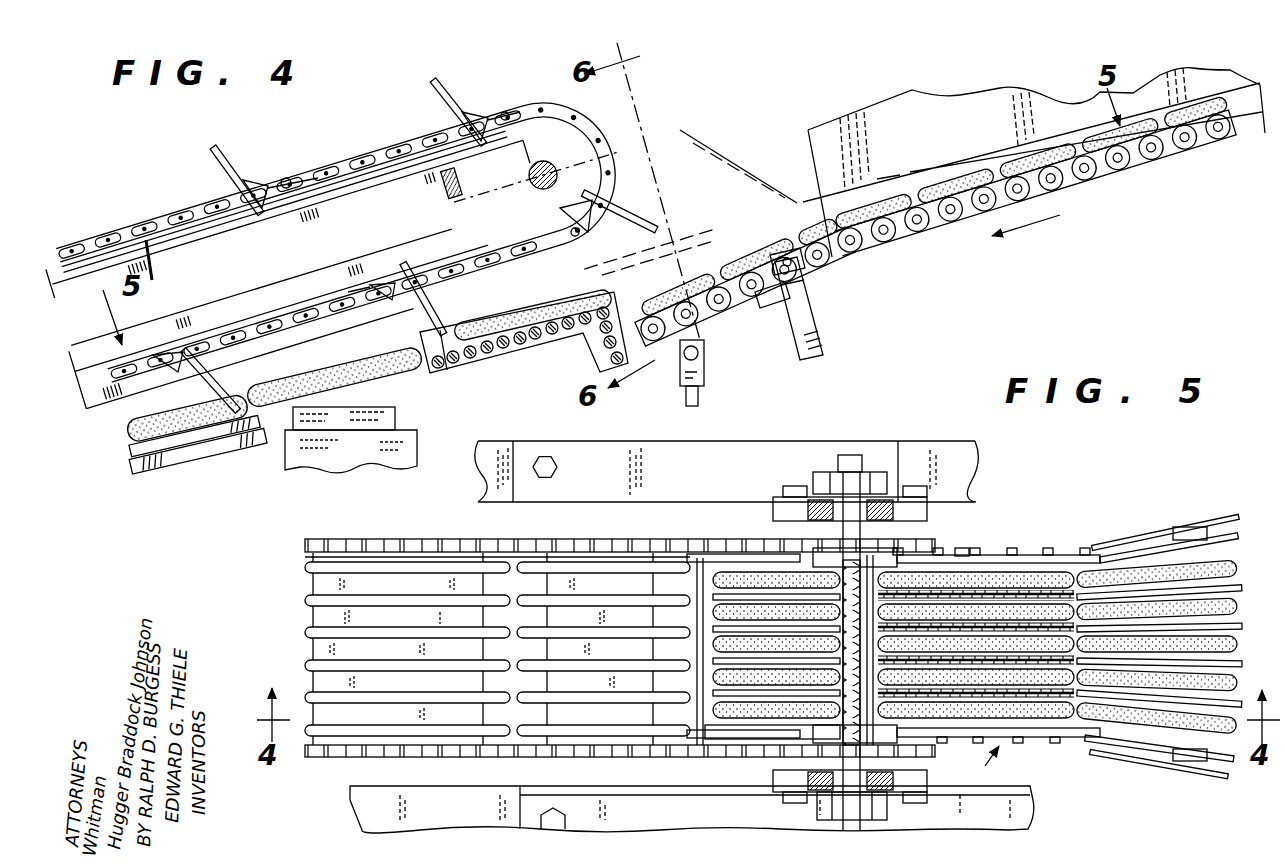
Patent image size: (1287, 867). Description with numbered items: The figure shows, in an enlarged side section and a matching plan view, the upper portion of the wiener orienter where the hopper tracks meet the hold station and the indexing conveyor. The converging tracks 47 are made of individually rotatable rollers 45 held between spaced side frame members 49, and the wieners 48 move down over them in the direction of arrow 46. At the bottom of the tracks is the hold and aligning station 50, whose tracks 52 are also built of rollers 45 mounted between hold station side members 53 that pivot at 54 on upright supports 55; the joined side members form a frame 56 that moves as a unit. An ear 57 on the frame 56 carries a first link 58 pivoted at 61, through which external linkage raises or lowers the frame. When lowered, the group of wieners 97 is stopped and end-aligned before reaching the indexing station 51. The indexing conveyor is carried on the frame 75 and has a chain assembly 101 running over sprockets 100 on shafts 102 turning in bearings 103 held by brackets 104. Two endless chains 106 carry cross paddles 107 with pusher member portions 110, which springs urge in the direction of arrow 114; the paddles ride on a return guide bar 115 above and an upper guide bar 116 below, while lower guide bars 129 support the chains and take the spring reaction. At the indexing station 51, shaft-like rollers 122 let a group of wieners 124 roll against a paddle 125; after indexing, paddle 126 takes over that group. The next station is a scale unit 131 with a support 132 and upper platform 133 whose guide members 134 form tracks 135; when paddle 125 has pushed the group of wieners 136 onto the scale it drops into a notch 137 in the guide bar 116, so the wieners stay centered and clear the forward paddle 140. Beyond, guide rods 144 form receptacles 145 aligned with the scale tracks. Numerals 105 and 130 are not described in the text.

In FIG. 4, the rollers 45 is at (1130, 166).
In FIG. 5, the rollers 45 is at (1060, 560).
In FIG. 4, the arrow 46 is at (1035, 226).
In FIG. 5, the longitudinally converging tracks 47 is at (1230, 570).
In FIG. 4, the wieners 48 is at (1003, 145).
In FIG. 5, the wieners 48 is at (1145, 610).
In FIG. 5, the side frame members 49 is at (1245, 734).
In FIG. 4, the hold and aligning station 50 is at (733, 190).
In FIG. 5, the hold and aligning station 50 is at (979, 762).
In FIG. 4, the indexing station 51 is at (557, 296).
In FIG. 5, the indexing station 51 is at (755, 533).
In FIG. 4, the tracks 52 is at (770, 246).
In FIG. 5, the tracks 52 is at (985, 575).
In FIG. 4, the hold station side members 53 is at (806, 266).
In FIG. 5, the hold station side members 53 is at (1075, 555).
In FIG. 4, the pivot 54 is at (815, 300).
In FIG. 4, the upright supports 55 is at (824, 342).
In FIG. 5, the upright supports 55 is at (1100, 546).
In FIG. 4, the hold station frame 56 is at (768, 304).
In FIG. 5, the hold station frame 56 is at (962, 547).
In FIG. 4, the ear 57 is at (705, 356).
In FIG. 4, the first link 58 is at (699, 402).
In FIG. 4, the pivot 61 is at (660, 375).
In FIG. 5, the frame 75 is at (669, 798).
In FIG. 4, the group of wieners 97 is at (680, 258).
In FIG. 5, the group of wieners 97 is at (1070, 731).
In FIG. 4, the sprockets 100 is at (490, 232).
In FIG. 5, the sprockets 100 is at (900, 755).
In FIG. 4, the indexing conveyor chain assembly 101 is at (102, 245).
In FIG. 4, the shafts 102 is at (563, 160).
In FIG. 5, the shafts 102 is at (856, 455).
In FIG. 5, the bearings 103 is at (812, 480).
In FIG. 5, the brackets 104 is at (936, 508).
In FIG. 4, the sprocket 105 is at (553, 125).
In FIG. 4, the endless chains 106 is at (345, 160).
In FIG. 5, the endless chains 106 is at (322, 539).
In FIG. 4, the cross paddles 107 is at (231, 150).
In FIG. 4, the pusher member portions 110 is at (436, 93).
In FIG. 4, the arrow 114 is at (193, 158).
In FIG. 4, the return guide bar 115 is at (146, 238).
In FIG. 4, the upper guide bar 116 is at (208, 316).
In FIG. 4, the shaft-like rollers 122 is at (470, 362).
In FIG. 4, the group of wieners 124 is at (476, 302).
In FIG. 4, the paddle 125 is at (418, 338).
In FIG. 4, the paddle 126 is at (657, 224).
In FIG. 4, the lower guide bars 129 is at (92, 405).
In FIG. 4, the pusher 130 is at (331, 358).
In FIG. 4, the scale unit 131 is at (404, 441).
In FIG. 4, the support 132 is at (265, 455).
In FIG. 4, the upper platform 133 is at (250, 398).
In FIG. 5, the upper platform 133 is at (560, 646).
In FIG. 5, the guide members 134 is at (520, 565).
In FIG. 5, the tracks 135 is at (620, 527).
In FIG. 4, the group of wieners 136 is at (352, 450).
In FIG. 4, the notch 137 is at (383, 277).
In FIG. 4, the paddles 140 is at (178, 400).
In FIG. 5, the guide rods 144 is at (305, 572).
In FIG. 5, the receptacles 145 is at (318, 586).